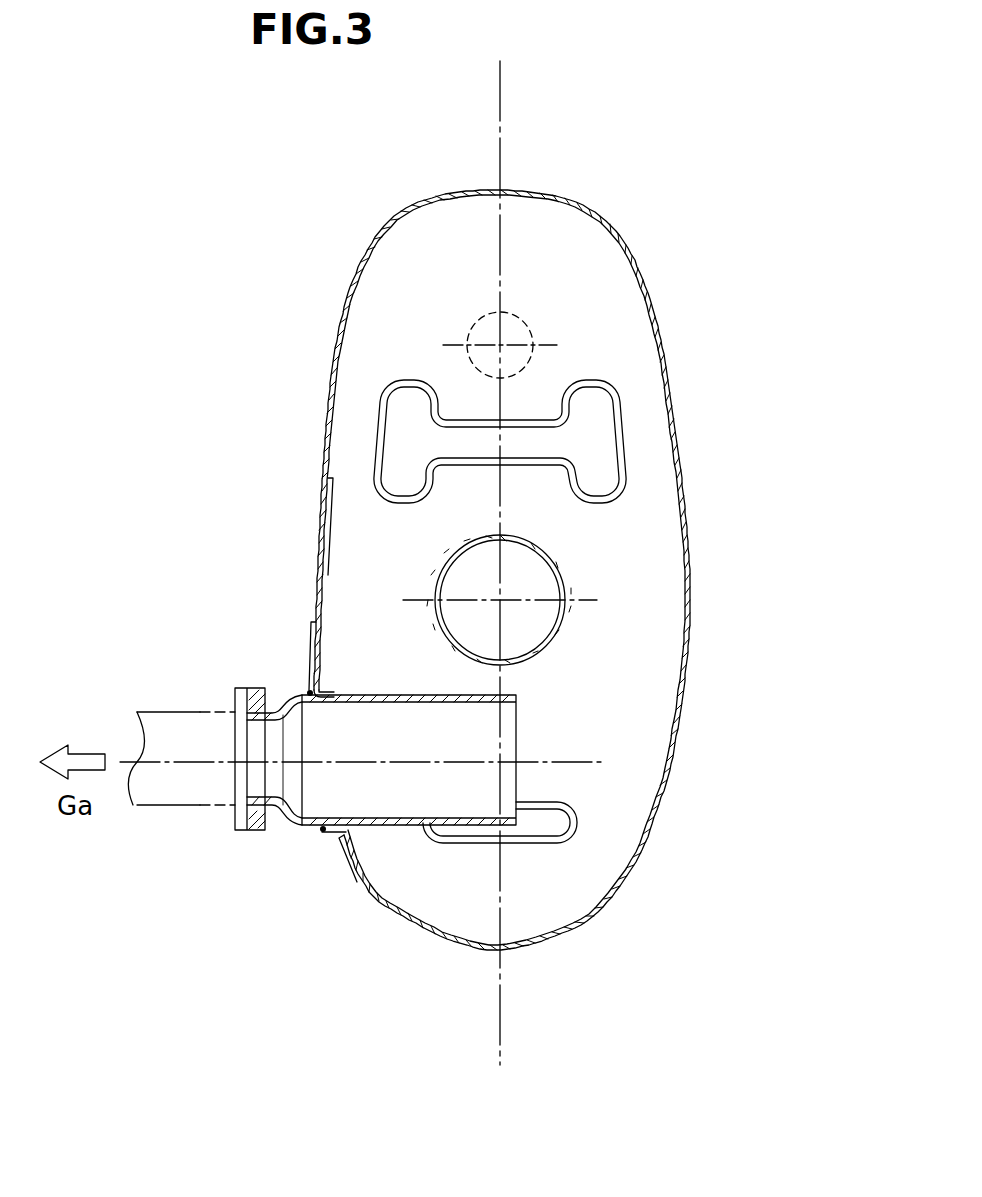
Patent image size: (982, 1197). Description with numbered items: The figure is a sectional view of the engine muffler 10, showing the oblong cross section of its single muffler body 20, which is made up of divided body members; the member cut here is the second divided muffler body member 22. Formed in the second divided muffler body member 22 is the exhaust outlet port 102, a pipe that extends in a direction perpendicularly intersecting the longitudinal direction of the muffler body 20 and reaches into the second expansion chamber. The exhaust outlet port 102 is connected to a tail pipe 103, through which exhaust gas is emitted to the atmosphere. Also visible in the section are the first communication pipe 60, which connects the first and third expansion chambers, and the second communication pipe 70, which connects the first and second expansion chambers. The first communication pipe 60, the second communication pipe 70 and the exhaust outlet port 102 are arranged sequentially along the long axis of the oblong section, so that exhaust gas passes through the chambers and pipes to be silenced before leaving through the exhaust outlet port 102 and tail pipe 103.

The engine muffler 10 is at (318, 192).
The muffler body 20 is at (498, 538).
The second divided muffler body member 22 is at (540, 193).
The first communication pipe 60 is at (473, 323).
The second communication pipe 70 is at (452, 555).
The exhaust outlet port 102 is at (327, 735).
The tail pipe 103 is at (192, 711).